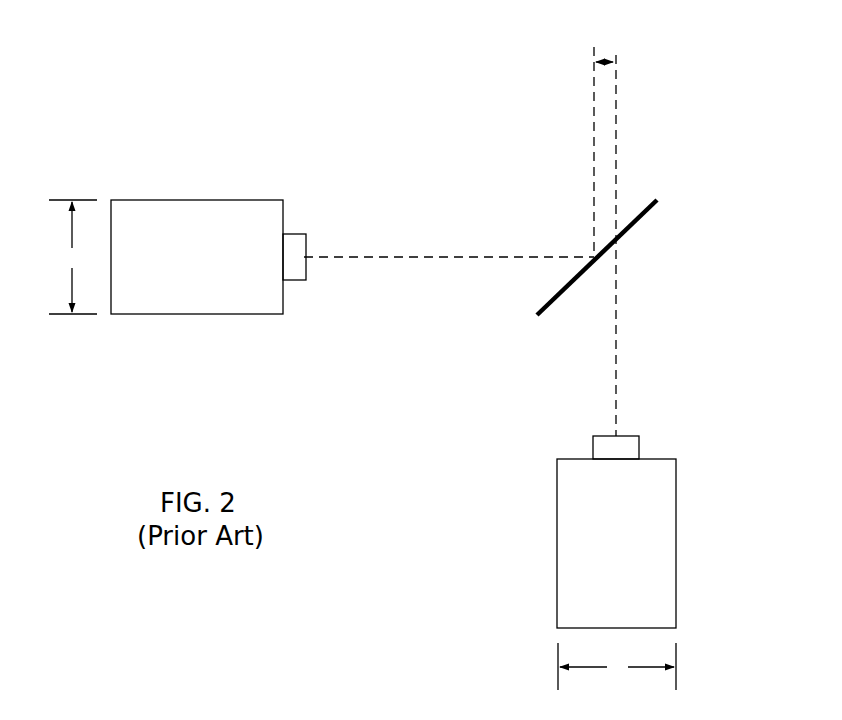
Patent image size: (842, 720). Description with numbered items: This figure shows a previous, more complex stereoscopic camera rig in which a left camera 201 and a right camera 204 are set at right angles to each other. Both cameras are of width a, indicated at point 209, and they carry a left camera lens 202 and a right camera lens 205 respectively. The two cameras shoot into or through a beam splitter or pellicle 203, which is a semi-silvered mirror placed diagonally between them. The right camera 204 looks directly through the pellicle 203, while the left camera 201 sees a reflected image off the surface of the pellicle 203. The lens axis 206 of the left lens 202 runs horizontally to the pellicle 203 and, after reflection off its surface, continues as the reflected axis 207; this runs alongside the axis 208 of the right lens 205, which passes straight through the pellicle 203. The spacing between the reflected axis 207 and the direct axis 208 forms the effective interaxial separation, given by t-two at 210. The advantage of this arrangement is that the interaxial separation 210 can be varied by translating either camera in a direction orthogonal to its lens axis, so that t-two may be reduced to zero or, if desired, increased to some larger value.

The left camera 201 is at (137, 296).
The left camera lens 202 is at (309, 286).
The beam splitter or pellicle 203 is at (632, 235).
The right camera 204 is at (654, 602).
The right camera lens 205 is at (644, 432).
The lens axis 206 is at (487, 254).
The reflected lens axis 207 is at (590, 95).
The axis 208 is at (619, 95).
The camera width a 209 is at (78, 190).
The interaxial separation t2 210 is at (602, 49).